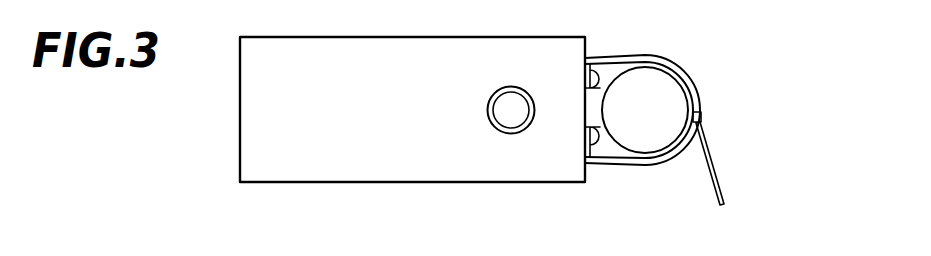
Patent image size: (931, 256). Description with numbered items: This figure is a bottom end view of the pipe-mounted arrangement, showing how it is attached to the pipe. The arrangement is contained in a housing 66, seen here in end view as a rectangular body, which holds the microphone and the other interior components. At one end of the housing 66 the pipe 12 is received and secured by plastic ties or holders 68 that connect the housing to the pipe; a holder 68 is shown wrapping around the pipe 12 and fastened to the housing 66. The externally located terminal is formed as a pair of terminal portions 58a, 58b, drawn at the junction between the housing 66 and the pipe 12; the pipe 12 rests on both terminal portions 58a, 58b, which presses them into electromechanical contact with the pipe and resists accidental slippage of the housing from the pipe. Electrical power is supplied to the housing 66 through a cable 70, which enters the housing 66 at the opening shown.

The housing 66 is at (338, 153).
The cable 70 is at (516, 128).
The pipe 12 is at (682, 84).
The terminal portion 58a is at (605, 130).
The terminal portion 58b is at (601, 65).
The plastic ties or holders 68 is at (697, 90).